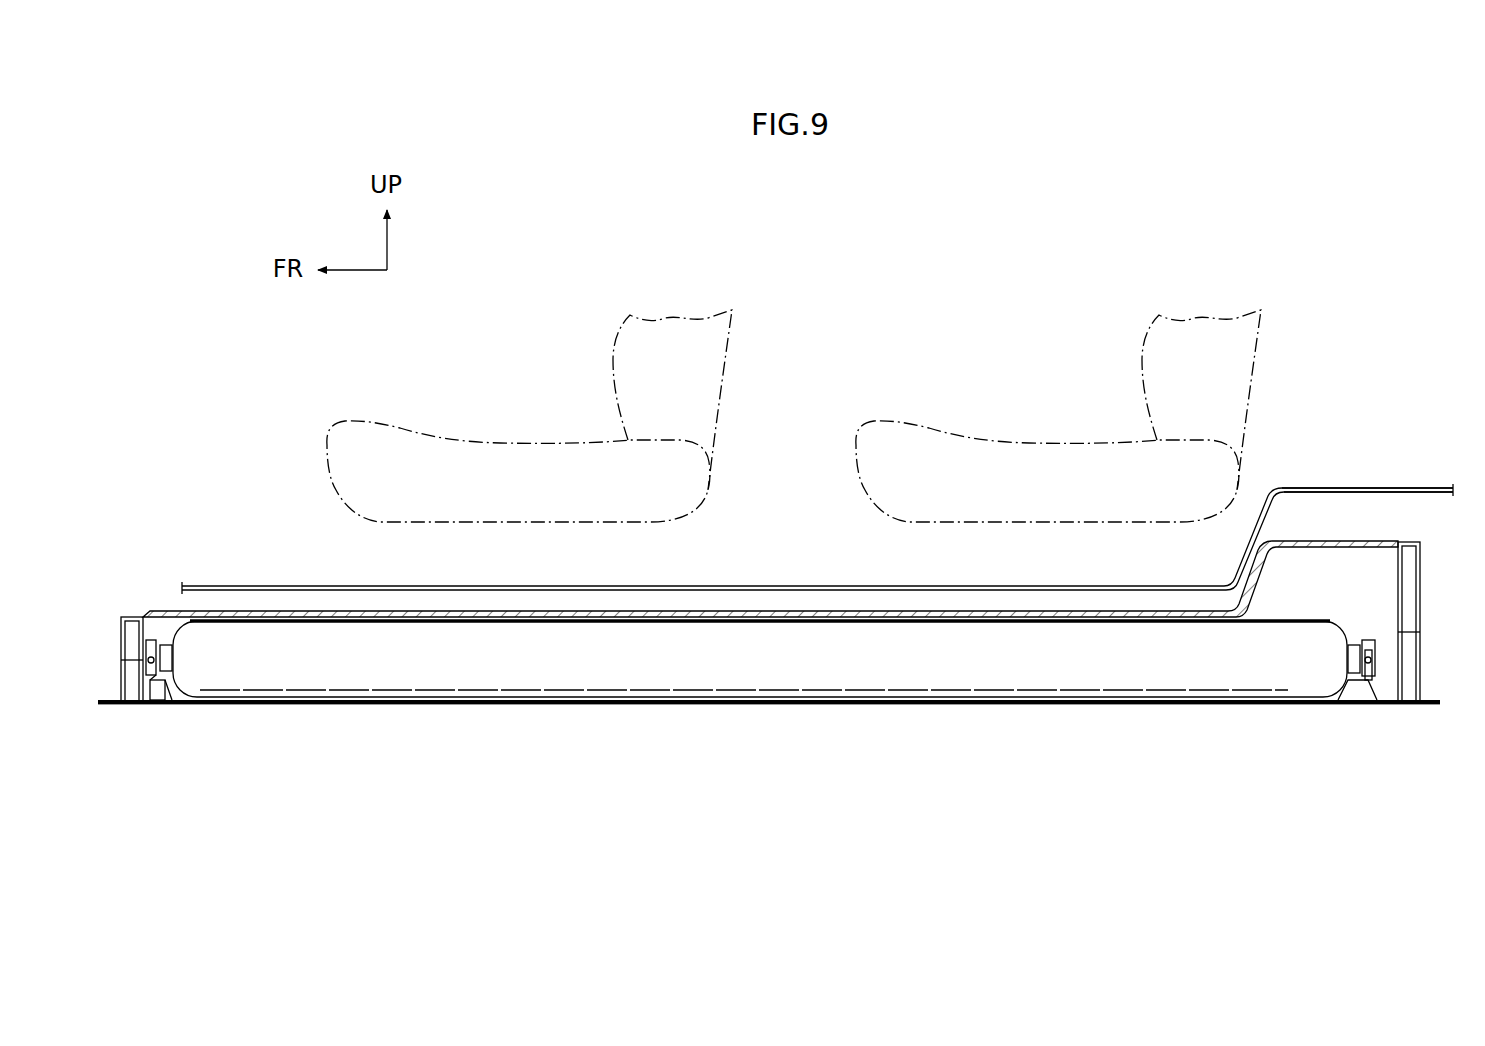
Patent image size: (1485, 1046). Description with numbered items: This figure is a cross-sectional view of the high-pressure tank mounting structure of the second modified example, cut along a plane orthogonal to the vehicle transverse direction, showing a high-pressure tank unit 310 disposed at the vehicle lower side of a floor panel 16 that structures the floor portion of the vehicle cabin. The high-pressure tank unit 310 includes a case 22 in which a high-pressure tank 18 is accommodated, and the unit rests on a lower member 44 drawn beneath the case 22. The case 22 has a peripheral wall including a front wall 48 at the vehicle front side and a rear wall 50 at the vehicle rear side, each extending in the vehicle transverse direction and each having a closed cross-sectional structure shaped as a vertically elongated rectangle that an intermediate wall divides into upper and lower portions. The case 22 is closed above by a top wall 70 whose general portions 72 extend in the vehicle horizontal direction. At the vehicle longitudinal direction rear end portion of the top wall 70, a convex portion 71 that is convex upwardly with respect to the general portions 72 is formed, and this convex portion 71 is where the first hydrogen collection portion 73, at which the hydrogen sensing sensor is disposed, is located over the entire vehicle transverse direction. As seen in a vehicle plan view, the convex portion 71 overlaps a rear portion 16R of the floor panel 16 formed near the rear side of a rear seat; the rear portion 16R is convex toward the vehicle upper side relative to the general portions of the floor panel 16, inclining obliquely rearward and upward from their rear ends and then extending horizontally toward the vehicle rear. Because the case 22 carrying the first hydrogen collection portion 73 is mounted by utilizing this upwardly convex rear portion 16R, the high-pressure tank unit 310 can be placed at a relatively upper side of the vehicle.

The floor panel 16 is at (712, 585).
The rear portion 16R is at (1313, 487).
The high-pressure tank 18 is at (722, 665).
The case 22 is at (1038, 708).
The floor panel lower member 44 is at (748, 705).
The front wall 48 is at (116, 636).
The rear wall 50 is at (1421, 618).
The top wall 70 is at (770, 566).
The general portion 72 is at (770, 572).
The first hydrogen collection portion 73 is at (770, 579).
The convex portion 71 is at (1337, 542).
The high-pressure tank unit 310 is at (936, 730).